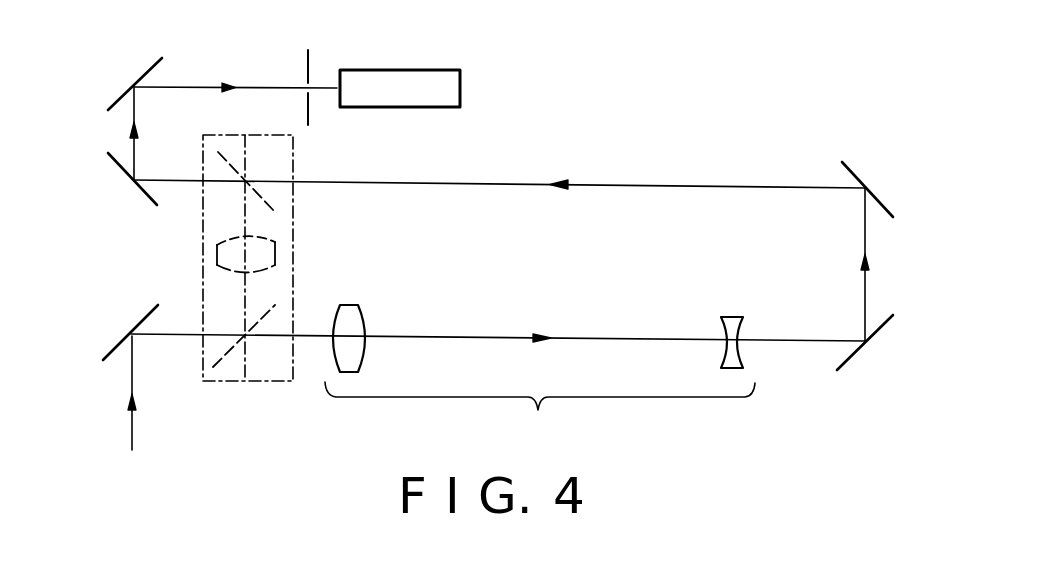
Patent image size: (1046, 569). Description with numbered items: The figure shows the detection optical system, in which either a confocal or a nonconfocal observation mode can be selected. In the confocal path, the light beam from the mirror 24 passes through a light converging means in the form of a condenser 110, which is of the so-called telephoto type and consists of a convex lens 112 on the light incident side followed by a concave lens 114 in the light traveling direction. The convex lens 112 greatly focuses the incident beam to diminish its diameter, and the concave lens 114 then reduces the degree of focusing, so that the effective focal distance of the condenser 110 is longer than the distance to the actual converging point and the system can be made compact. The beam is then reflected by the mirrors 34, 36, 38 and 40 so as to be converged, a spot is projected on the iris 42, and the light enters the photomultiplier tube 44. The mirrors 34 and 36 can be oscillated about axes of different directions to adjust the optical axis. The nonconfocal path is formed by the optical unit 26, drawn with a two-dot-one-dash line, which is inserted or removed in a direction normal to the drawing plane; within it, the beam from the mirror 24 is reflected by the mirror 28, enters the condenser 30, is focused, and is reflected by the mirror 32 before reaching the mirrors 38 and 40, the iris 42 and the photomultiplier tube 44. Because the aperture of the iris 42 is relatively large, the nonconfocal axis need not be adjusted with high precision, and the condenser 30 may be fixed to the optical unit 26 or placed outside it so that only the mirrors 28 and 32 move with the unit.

The mirror 24 is at (120, 342).
The optical unit 26 is at (295, 292).
The mirror 28 is at (243, 342).
The condenser 30 is at (217, 252).
The mirror 32 is at (243, 172).
The mirror 34 is at (857, 350).
The mirror 36 is at (877, 190).
The mirror 38 is at (140, 189).
The mirror 40 is at (132, 88).
The iris 42 is at (308, 63).
The photomultiplier tube 44 is at (408, 68).
The condenser 110 is at (540, 415).
The convex lens 112 is at (363, 310).
The concave lens 114 is at (737, 317).